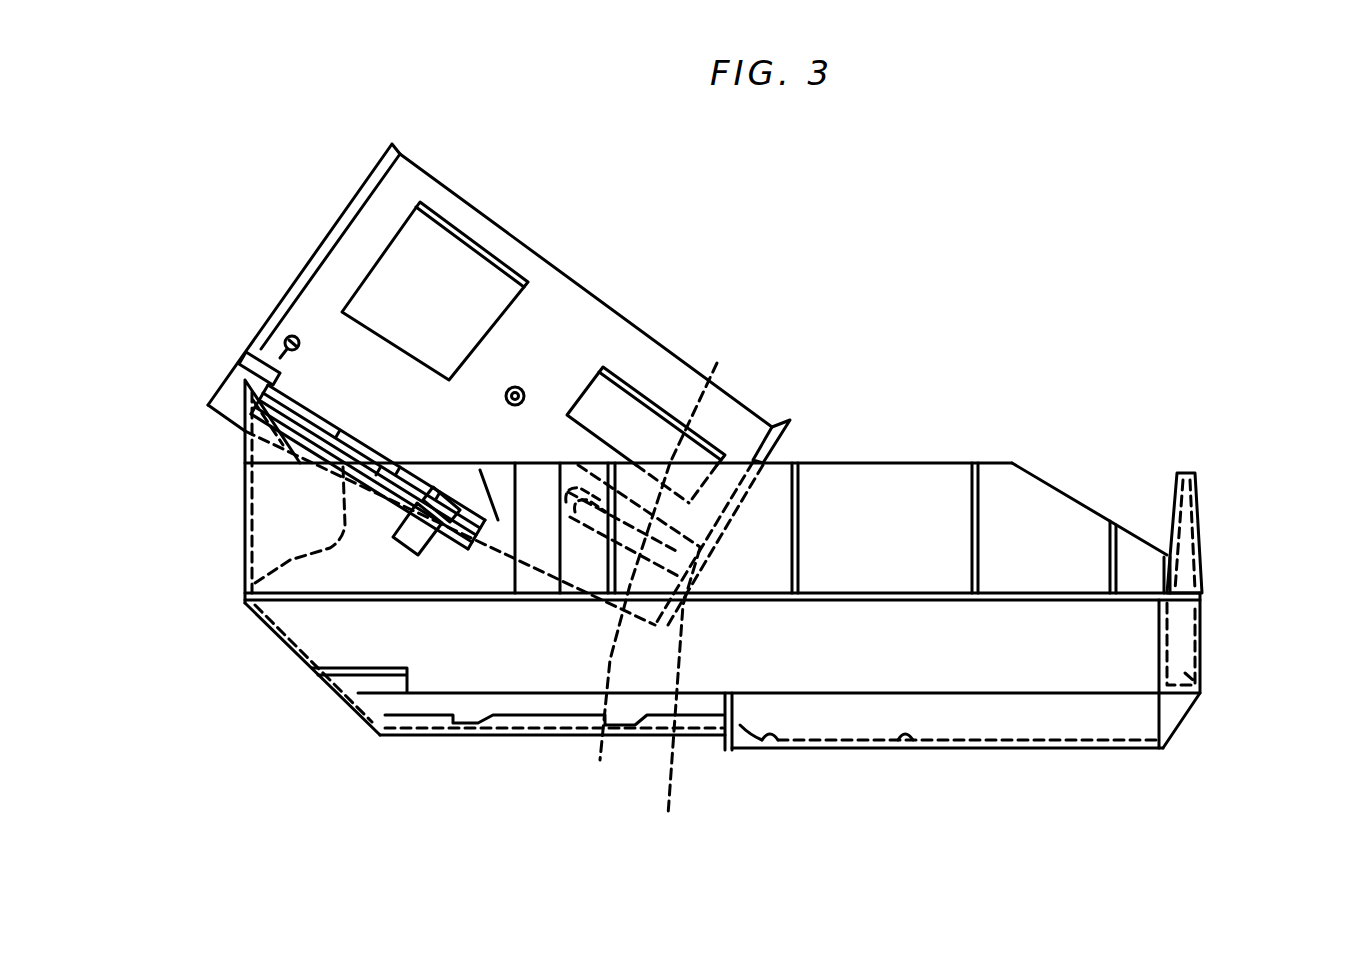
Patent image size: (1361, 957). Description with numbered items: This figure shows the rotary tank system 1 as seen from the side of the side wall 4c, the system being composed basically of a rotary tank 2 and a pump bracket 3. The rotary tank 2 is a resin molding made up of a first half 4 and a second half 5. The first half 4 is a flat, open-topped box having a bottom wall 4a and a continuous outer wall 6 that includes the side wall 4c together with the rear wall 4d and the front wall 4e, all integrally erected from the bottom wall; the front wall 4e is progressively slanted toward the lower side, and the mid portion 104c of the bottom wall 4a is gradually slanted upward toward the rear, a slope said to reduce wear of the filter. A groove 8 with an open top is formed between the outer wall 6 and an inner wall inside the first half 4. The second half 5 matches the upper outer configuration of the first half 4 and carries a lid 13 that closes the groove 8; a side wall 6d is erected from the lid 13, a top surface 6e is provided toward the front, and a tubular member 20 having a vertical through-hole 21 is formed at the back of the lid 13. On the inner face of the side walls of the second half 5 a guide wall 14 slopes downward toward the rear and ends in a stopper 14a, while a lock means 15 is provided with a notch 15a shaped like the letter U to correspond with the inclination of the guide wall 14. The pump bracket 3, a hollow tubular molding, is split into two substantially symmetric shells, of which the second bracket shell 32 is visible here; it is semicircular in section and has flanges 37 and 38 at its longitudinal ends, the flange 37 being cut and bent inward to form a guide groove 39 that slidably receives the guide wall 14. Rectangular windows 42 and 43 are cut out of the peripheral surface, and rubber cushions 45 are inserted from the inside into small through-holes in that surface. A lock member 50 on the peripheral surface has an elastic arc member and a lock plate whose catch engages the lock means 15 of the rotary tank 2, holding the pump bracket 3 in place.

The rotary tank system 1 is at (1052, 398).
The rotary tank 2 is at (915, 458).
The pump bracket 3 is at (625, 300).
The first half 4 is at (1082, 750).
The bottom wall 4a is at (913, 745).
The side wall 4c is at (1005, 677).
The rear wall 4d is at (1210, 640).
The front wall 4e is at (268, 655).
The second half 5 is at (1050, 487).
The outer wall 6 is at (505, 670).
The side wall 6d is at (240, 545).
The top surface 6e is at (992, 458).
The groove 8 is at (1205, 677).
The lid 13 is at (1055, 588).
The guide wall 14 is at (554, 629).
The stopper 14a is at (677, 702).
The lock means 15 is at (400, 545).
The notch 15a is at (432, 545).
The tubular member 20 is at (1200, 497).
The through-hole 21 is at (1183, 472).
The second bracket shell 32 is at (345, 245).
The flange 37 is at (775, 423).
The flange 38 is at (385, 145).
The guide groove 39 is at (710, 396).
The rectangular window 42 is at (460, 268).
The rectangular window 43 is at (632, 408).
The rubber cushion 45 is at (290, 340).
The lock member 50 is at (360, 405).
The mid portion of bottom wall 104c is at (774, 748).